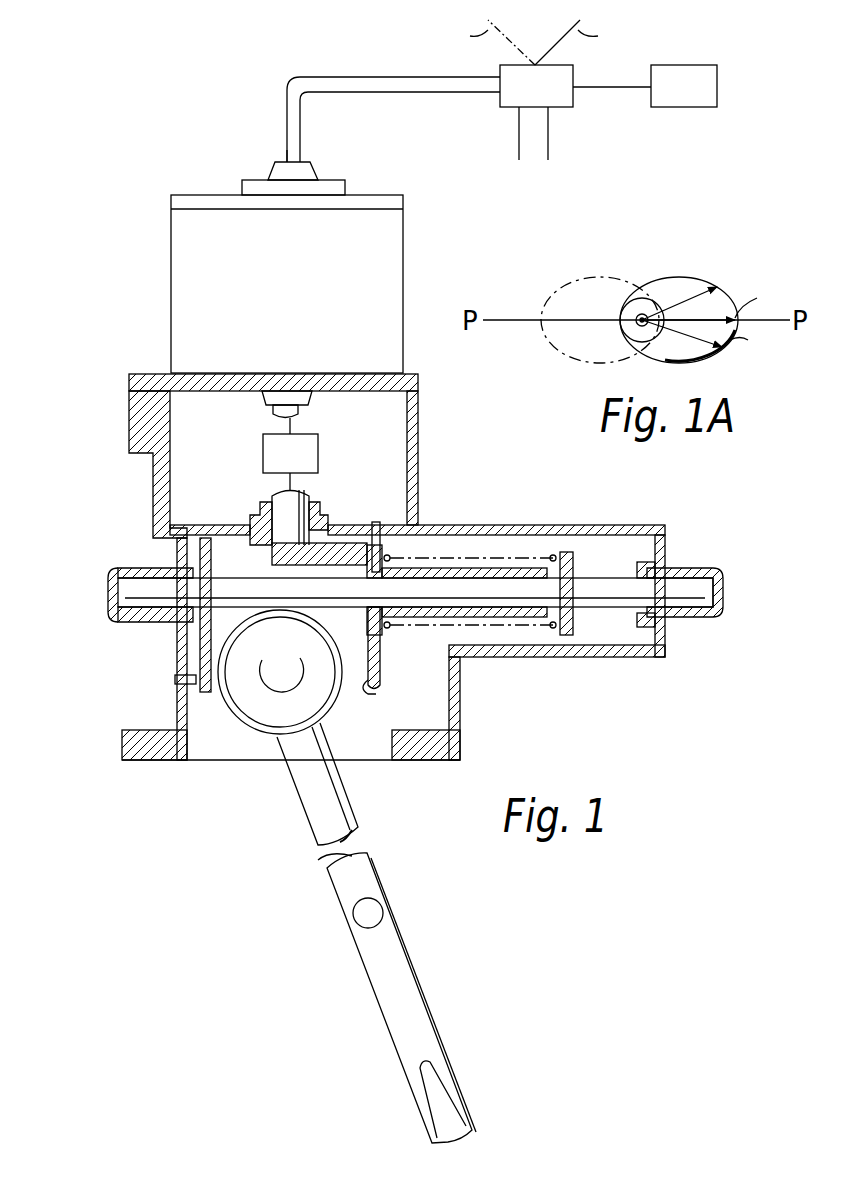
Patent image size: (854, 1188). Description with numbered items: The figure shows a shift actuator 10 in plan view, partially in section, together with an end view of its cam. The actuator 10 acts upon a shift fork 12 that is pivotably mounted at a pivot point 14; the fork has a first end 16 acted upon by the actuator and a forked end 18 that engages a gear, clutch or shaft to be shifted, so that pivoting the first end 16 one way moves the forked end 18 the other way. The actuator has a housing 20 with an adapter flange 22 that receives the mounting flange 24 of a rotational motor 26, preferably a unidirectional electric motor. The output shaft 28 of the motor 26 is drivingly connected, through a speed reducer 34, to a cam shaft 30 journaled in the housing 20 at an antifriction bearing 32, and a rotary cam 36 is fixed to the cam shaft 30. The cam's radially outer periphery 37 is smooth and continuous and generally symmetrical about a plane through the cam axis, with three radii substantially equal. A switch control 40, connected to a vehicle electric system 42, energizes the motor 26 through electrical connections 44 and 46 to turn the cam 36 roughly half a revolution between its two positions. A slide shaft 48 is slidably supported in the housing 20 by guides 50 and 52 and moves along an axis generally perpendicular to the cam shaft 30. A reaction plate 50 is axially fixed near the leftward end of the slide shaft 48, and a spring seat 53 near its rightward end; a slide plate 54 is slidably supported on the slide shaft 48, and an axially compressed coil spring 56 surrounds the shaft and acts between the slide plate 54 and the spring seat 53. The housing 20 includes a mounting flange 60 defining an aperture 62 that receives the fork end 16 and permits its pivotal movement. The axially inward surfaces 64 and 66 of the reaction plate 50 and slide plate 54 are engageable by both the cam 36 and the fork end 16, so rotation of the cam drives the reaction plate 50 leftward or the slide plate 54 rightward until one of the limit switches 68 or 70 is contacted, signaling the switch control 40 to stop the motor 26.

In FIG. 1, the shift actuator 10 is at (106, 304).
In FIG. 1, the shift fork 12 is at (352, 806).
In FIG. 1, the pivot point 14 is at (378, 913).
In FIG. 1, the first end 16 is at (286, 716).
In FIG. 1, the forked end 18 is at (458, 1110).
In FIG. 1, the housing 20 is at (379, 568).
In FIG. 1, the adapter flange 22 is at (413, 410).
In FIG. 1, the mounting flange 24 is at (402, 375).
In FIG. 1, the rotational motor 26 is at (392, 228).
In FIG. 1, the output shaft 28 is at (288, 430).
In FIG. 1, the cam shaft 30 is at (283, 504).
In FIG. 1A, the cam shaft 30 is at (642, 313).
In FIG. 1, the antifriction bearing 32 is at (313, 518).
In FIG. 1, the speed reducer 34 is at (268, 456).
In FIG. 1, the rotary cam 36 is at (342, 555).
In FIG. 1A, the rotary cam 36 is at (735, 283).
In FIG. 1A, the radially outer periphery 37 is at (700, 362).
In FIG. 1, the switch control 40 is at (560, 97).
In FIG. 1, the vehicle electric system 42 is at (705, 72).
In FIG. 1, the electrical connection 44 is at (390, 77).
In FIG. 1, the electrical connection 46 is at (400, 92).
In FIG. 1, the slide shaft 48 is at (586, 580).
In FIG. 1, the reaction plate 50 is at (690, 568).
In FIG. 1, the guide 52 is at (112, 570).
In FIG. 1, the spring seat 53 is at (566, 640).
In FIG. 1, the slide plate 54 is at (379, 662).
In FIG. 1, the coil spring 56 is at (471, 556).
In FIG. 1, the mounting flange 60 is at (132, 756).
In FIG. 1, the aperture 62 is at (223, 750).
In FIG. 1, the axially inward surface 64 is at (212, 556).
In FIG. 1, the axially inward surface 66 is at (376, 694).
In FIG. 1, the limit switch 68 is at (519, 150).
In FIG. 1, the limit switch 70 is at (548, 150).